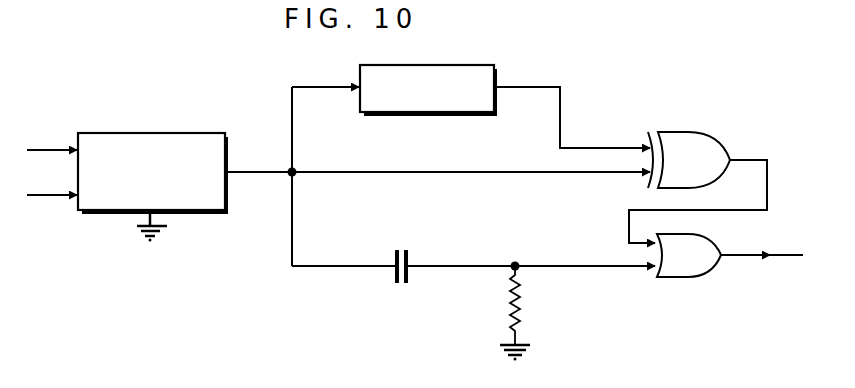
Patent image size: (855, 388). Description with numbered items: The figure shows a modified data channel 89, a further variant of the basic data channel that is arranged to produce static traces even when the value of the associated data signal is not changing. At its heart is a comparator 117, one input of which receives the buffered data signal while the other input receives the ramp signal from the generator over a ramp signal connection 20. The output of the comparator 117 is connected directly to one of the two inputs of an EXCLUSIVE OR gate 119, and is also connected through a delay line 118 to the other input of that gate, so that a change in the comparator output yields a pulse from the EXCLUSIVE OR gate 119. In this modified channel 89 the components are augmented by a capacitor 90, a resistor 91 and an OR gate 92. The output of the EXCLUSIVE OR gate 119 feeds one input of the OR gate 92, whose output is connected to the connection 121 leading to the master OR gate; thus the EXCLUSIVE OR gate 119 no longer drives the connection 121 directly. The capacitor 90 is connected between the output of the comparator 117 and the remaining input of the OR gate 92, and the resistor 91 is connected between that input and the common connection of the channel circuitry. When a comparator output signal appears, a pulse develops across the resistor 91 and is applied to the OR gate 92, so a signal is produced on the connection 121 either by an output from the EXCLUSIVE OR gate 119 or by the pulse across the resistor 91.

The ramp signal connection 20 is at (47, 195).
The channel 89 is at (203, 280).
The capacitor 90 is at (403, 250).
The resistor 91 is at (522, 310).
The OR gate 92 is at (690, 277).
The comparator 117 is at (152, 133).
The delay line 118 is at (450, 65).
The EXCLUSIVE OR gate 119 is at (697, 132).
The connection 121 is at (785, 255).